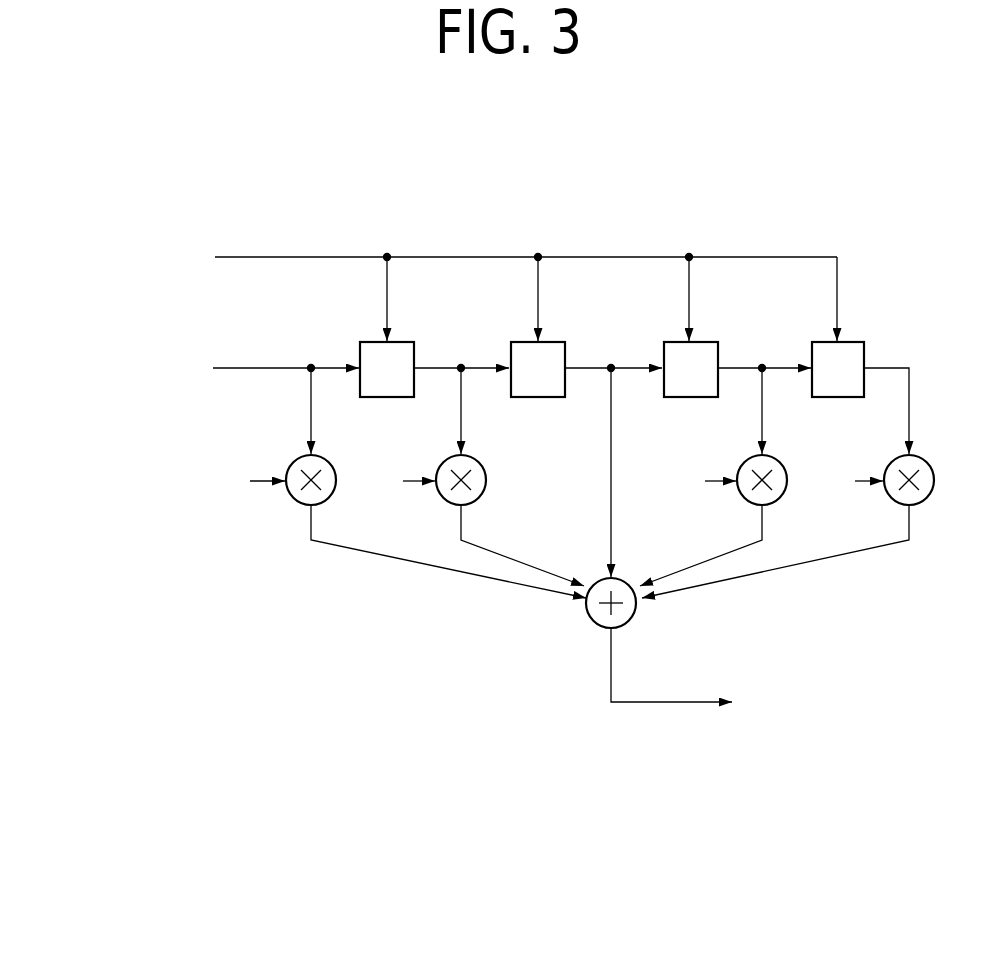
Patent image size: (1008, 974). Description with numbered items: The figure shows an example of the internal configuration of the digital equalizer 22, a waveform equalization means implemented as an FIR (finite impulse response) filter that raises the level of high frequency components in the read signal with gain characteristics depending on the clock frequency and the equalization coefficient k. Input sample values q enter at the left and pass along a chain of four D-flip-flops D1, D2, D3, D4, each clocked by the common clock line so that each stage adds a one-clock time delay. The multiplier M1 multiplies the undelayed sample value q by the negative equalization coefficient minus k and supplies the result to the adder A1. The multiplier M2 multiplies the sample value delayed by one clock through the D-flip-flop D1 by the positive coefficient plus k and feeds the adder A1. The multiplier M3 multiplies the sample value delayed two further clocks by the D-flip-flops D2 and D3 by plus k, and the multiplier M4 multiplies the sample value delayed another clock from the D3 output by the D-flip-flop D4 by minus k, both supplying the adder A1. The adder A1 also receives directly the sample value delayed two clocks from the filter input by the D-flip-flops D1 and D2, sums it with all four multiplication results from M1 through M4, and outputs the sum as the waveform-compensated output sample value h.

The digital equalizer 22 is at (467, 678).
The D-flip-flop D1 is at (404, 342).
The D-flip-flop D2 is at (556, 342).
The D-flip-flop D3 is at (708, 342).
The D-flip-flop D4 is at (857, 342).
The multiplier M1 is at (293, 500).
The multiplier M2 is at (447, 500).
The multiplier M3 is at (745, 500).
The multiplier M4 is at (893, 500).
The adder A1 is at (597, 626).